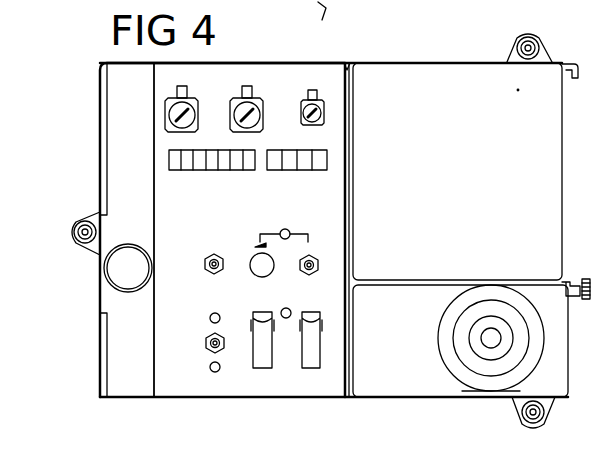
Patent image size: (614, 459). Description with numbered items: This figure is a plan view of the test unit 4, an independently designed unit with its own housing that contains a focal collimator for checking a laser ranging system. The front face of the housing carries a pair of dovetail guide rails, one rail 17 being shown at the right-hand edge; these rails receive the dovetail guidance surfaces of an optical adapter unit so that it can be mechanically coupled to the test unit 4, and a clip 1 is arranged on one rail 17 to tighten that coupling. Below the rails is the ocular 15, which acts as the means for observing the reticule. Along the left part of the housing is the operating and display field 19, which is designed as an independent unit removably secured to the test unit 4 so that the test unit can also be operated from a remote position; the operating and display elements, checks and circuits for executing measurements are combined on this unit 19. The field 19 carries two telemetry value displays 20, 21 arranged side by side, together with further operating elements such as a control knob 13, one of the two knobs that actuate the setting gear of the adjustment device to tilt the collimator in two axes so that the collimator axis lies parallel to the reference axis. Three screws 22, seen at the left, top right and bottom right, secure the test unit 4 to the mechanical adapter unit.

The fastening screw 1 is at (591, 290).
The test unit 4 is at (537, 188).
The control knob 13 is at (120, 273).
The ocular 15 is at (522, 358).
The dovetail guide rail 17 is at (575, 84).
The operating and display field 19 is at (197, 228).
The telemetry value display 20 is at (193, 172).
The telemetry value display 21 is at (239, 172).
The screw 22 is at (545, 45).